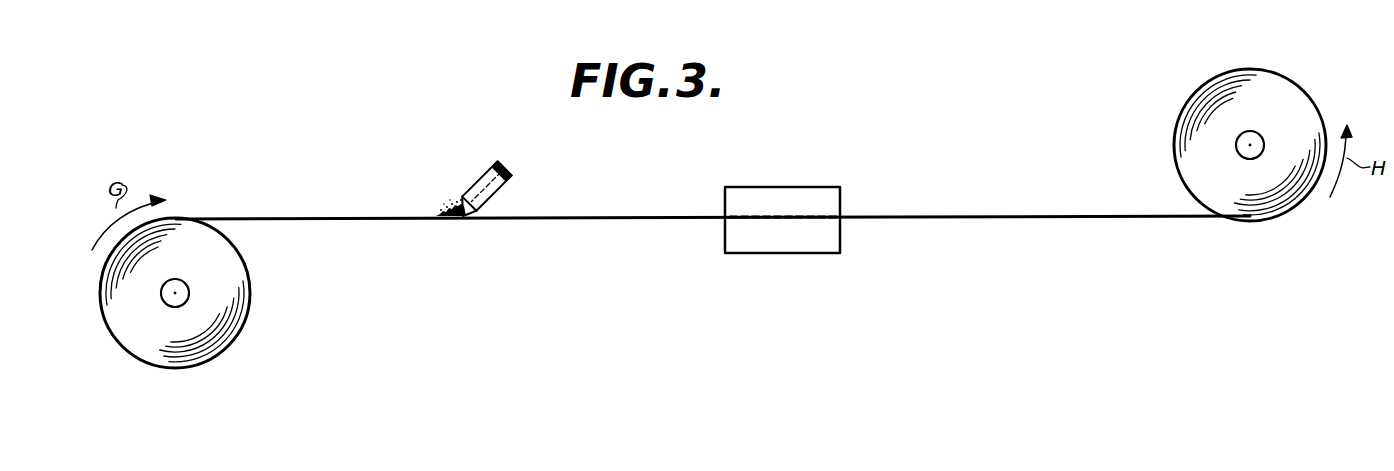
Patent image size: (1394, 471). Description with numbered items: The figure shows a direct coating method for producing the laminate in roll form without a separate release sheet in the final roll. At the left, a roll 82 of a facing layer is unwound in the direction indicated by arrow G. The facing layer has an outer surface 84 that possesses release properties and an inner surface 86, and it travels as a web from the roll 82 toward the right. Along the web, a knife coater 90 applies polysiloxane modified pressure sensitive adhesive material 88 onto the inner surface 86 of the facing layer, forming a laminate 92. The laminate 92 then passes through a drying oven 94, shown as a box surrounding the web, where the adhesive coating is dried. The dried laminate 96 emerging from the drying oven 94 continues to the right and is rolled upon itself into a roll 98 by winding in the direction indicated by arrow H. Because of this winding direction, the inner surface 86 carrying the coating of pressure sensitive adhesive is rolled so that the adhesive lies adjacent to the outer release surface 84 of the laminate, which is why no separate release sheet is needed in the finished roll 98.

The roll 82 is at (247, 266).
The outer surface 84 is at (352, 217).
The inner surface 86 is at (288, 217).
The polysiloxane modified pressure sensitive adhesive material 88 is at (443, 204).
The knife coater 90 is at (508, 167).
The laminate 92 is at (590, 217).
The drying oven 94 is at (778, 187).
The dried laminate 96 is at (966, 216).
The roll 98 is at (1287, 203).